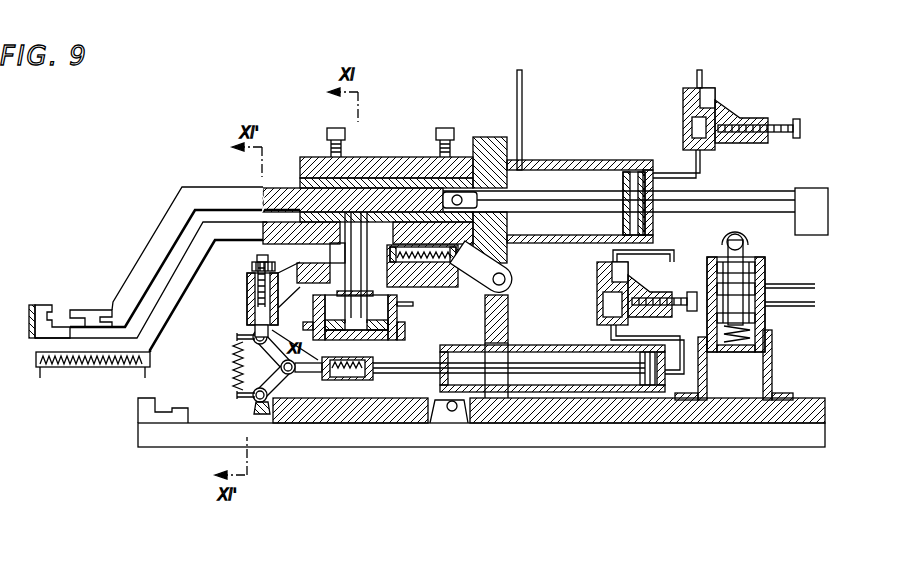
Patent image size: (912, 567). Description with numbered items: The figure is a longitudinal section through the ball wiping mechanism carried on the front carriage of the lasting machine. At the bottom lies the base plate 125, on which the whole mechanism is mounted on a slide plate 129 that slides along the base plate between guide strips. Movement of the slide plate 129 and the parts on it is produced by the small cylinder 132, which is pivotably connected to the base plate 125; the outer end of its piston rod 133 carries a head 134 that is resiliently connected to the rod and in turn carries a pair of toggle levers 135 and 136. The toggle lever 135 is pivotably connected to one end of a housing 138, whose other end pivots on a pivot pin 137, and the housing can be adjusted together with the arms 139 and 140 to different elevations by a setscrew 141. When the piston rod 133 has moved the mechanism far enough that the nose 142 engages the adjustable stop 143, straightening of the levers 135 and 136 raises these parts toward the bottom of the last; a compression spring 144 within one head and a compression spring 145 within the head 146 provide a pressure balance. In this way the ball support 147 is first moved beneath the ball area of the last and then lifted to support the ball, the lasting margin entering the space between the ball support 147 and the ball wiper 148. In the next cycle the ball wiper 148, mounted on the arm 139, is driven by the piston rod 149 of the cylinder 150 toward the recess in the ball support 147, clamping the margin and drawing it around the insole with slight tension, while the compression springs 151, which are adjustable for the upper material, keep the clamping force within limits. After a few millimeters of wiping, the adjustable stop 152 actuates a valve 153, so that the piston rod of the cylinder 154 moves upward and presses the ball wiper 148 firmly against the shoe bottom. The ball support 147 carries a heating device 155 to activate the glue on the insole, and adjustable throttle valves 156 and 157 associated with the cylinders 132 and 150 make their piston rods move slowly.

The base plate 125 is at (722, 440).
The slide plate 129 is at (822, 417).
The small cylinder 132 is at (542, 345).
The piston rod 133 is at (543, 374).
The head 134 is at (340, 381).
The toggle lever 135 is at (235, 367).
The toggle lever 136 is at (233, 382).
The pivot pin 137 is at (508, 280).
The housing 138 is at (481, 137).
The arm 139 is at (158, 240).
The arm 140 is at (160, 322).
The setscrew 141 is at (251, 266).
The nose 142 is at (268, 415).
The adjustable stop 143 is at (140, 402).
The compression spring 144 is at (352, 381).
The compression spring 145 is at (248, 287).
The head 146 is at (248, 307).
The ball support 147 is at (40, 305).
The ball wiper 148 is at (80, 309).
The piston rod 149 is at (570, 192).
The cylinder 150 is at (627, 170).
The compression spring 151 is at (433, 285).
The adjustable stop 152 is at (828, 212).
The valve 153 is at (765, 270).
The cylinder 154 is at (397, 315).
The heating device 155 is at (82, 368).
The adjustable throttle valve 156 is at (750, 117).
The adjustable throttle valve 157 is at (655, 290).